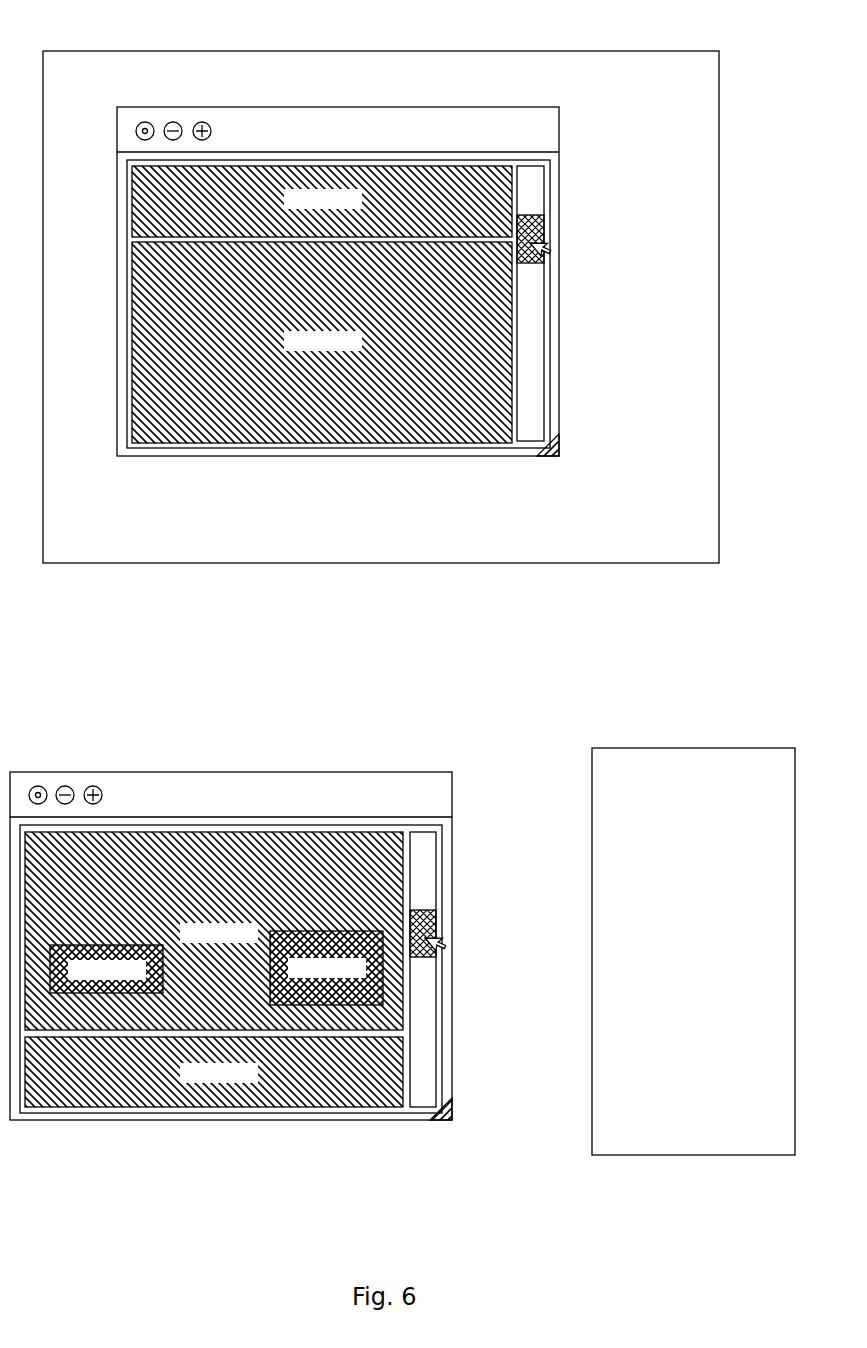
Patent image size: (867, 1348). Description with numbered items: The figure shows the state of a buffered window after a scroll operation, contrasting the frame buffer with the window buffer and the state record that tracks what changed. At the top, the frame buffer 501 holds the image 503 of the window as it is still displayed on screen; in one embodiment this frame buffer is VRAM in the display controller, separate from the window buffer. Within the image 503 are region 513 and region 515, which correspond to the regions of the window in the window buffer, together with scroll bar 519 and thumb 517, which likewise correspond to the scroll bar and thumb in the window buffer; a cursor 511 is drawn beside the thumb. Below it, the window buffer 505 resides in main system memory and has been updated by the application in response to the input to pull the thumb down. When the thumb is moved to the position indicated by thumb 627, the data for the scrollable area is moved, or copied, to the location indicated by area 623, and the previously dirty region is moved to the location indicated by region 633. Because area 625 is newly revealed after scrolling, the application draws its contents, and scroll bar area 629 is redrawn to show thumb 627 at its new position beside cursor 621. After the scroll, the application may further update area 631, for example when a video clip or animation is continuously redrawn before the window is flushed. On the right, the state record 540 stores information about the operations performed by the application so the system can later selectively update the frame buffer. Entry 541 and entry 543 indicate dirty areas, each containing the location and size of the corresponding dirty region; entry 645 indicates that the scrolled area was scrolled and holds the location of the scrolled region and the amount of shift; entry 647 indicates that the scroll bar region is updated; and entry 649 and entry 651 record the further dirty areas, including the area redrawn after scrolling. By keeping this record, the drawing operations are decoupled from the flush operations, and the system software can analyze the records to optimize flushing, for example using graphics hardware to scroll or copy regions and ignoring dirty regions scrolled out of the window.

The frame buffer 501 is at (662, 49).
The image of the window 503 is at (505, 104).
The region 513 is at (418, 167).
The region 515 is at (228, 443).
The thumb 517 is at (537, 216).
The cursor 511 is at (553, 255).
The scroll bar 519 is at (545, 348).
The window buffer 505 is at (396, 770).
The area 623 is at (288, 832).
The area 631 is at (88, 945).
The region 633 is at (303, 931).
The area 625 is at (290, 1107).
The scroll bar area 629 is at (437, 1043).
The thumb 627 is at (427, 911).
The cursor 621 is at (443, 944).
The state record 540 is at (750, 747).
The entry 541 is at (693, 769).
The entry 543 is at (693, 805).
The entry 645 is at (746, 843).
The entry 647 is at (693, 880).
The state record entry area B6 dirty 649 is at (693, 917).
The state record entry area B7 dirty 651 is at (693, 953).